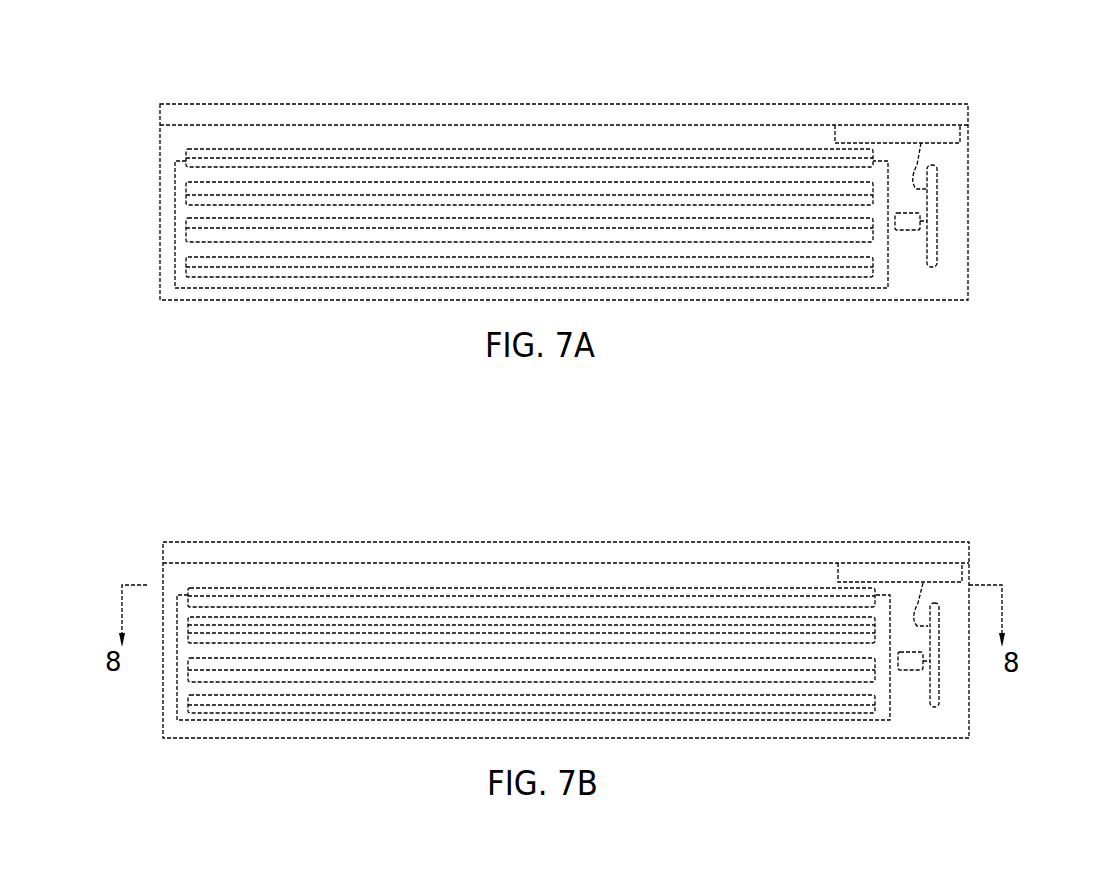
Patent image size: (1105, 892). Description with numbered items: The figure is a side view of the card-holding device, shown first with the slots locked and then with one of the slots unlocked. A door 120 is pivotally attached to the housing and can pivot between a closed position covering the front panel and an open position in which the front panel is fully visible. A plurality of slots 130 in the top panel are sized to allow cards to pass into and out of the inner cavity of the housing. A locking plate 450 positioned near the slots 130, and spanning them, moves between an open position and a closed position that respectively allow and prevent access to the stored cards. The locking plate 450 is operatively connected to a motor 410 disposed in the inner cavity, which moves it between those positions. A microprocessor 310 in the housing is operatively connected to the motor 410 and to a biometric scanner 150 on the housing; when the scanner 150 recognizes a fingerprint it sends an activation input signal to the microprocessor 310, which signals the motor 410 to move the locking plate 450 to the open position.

In FIG. 7A, the door 120 is at (555, 112).
In FIG. 7A, the slots 130 is at (185, 257).
In FIG. 7B, the slots 130 is at (188, 711).
In FIG. 7A, the biometric scanner 150 is at (905, 130).
In FIG. 7B, the biometric scanner 150 is at (906, 575).
In FIG. 7A, the microprocessor 310 is at (936, 212).
In FIG. 7B, the microprocessor 310 is at (936, 655).
In FIG. 7A, the motor 410 is at (935, 221).
In FIG. 7B, the motor 410 is at (918, 667).
In FIG. 7A, the locking plate 450 is at (888, 288).
In FIG. 7B, the locking plate 450 is at (890, 720).